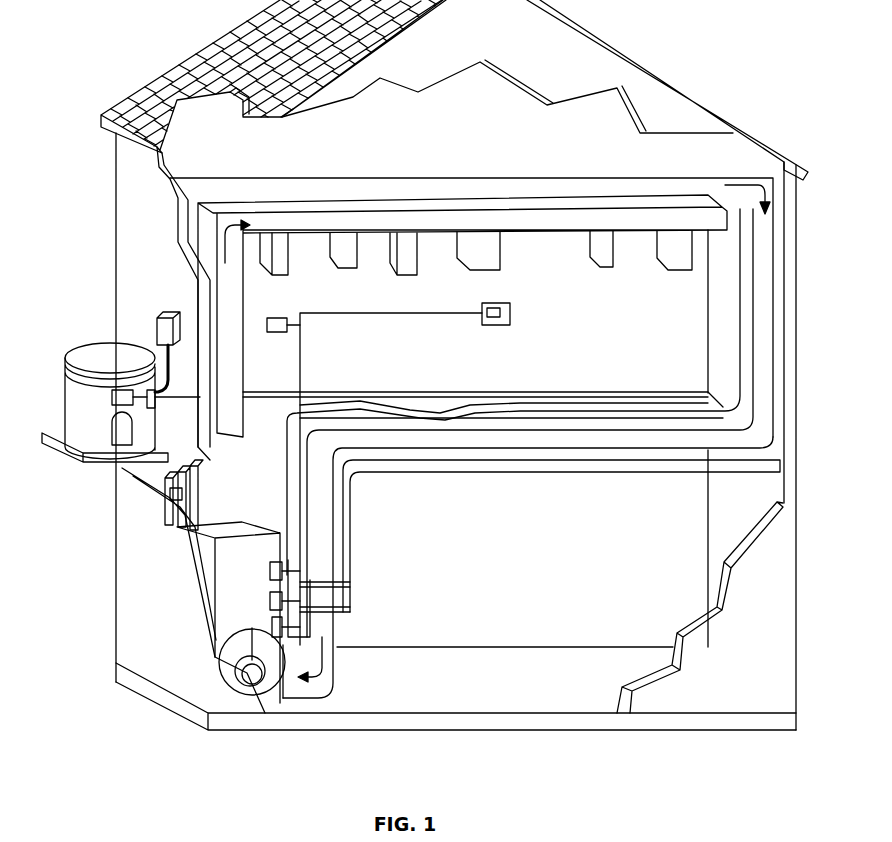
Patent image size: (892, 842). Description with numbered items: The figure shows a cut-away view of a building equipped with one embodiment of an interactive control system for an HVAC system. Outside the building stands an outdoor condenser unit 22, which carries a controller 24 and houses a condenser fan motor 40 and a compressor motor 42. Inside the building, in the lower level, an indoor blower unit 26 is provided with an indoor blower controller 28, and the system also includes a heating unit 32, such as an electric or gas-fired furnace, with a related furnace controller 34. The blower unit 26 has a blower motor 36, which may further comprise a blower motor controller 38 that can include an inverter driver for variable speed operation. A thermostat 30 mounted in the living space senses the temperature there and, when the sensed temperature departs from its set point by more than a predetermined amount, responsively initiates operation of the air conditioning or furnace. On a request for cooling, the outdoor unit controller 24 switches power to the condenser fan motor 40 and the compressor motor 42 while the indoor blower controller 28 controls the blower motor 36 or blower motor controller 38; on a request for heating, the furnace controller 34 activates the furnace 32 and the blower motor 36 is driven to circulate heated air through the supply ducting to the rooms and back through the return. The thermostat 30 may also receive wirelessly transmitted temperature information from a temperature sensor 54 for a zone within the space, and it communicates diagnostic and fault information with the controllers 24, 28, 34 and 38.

The outdoor condenser unit 22 is at (97, 357).
The outdoor unit controller 24 is at (150, 408).
The indoor blower unit 26 is at (197, 564).
The indoor blower controller 28 is at (230, 582).
The thermostat 30 is at (510, 313).
The heating unit 32 is at (237, 623).
The furnace controller 34 is at (268, 608).
The blower motor 36 is at (262, 685).
The blower motor controller 38 is at (283, 645).
The condenser fan motor 40 is at (112, 397).
The compressor motor 42 is at (112, 424).
The temperature sensor 54 is at (267, 325).